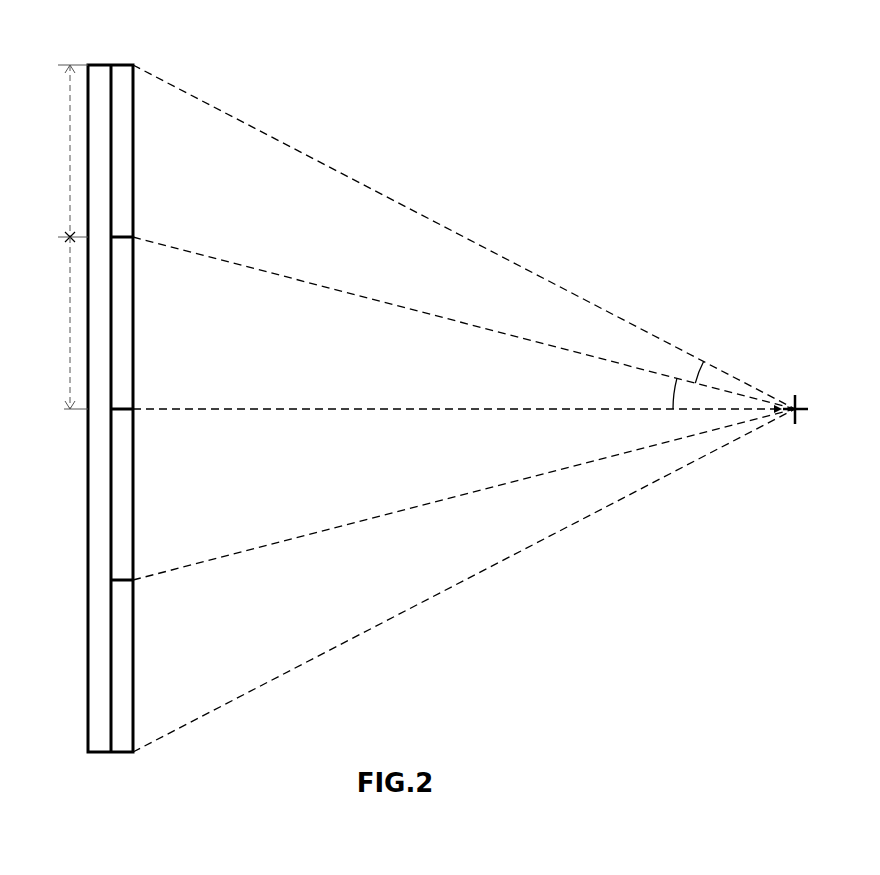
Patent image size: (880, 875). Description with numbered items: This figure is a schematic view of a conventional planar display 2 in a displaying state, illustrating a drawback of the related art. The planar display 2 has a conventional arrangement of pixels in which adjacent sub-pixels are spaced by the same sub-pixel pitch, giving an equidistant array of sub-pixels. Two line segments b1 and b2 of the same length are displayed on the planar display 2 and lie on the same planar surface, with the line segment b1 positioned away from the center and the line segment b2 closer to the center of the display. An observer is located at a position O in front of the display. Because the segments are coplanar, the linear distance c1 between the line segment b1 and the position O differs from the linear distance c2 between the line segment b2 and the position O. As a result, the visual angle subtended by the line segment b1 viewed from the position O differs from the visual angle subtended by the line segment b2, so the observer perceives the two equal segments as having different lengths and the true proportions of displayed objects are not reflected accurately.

The planar display 2 is at (418, 42).
The line segment b1 is at (63, 151).
The line segment b2 is at (60, 320).
The linear distance c1 is at (464, 237).
The linear distance c2 is at (464, 392).
The position of the observer O is at (791, 398).